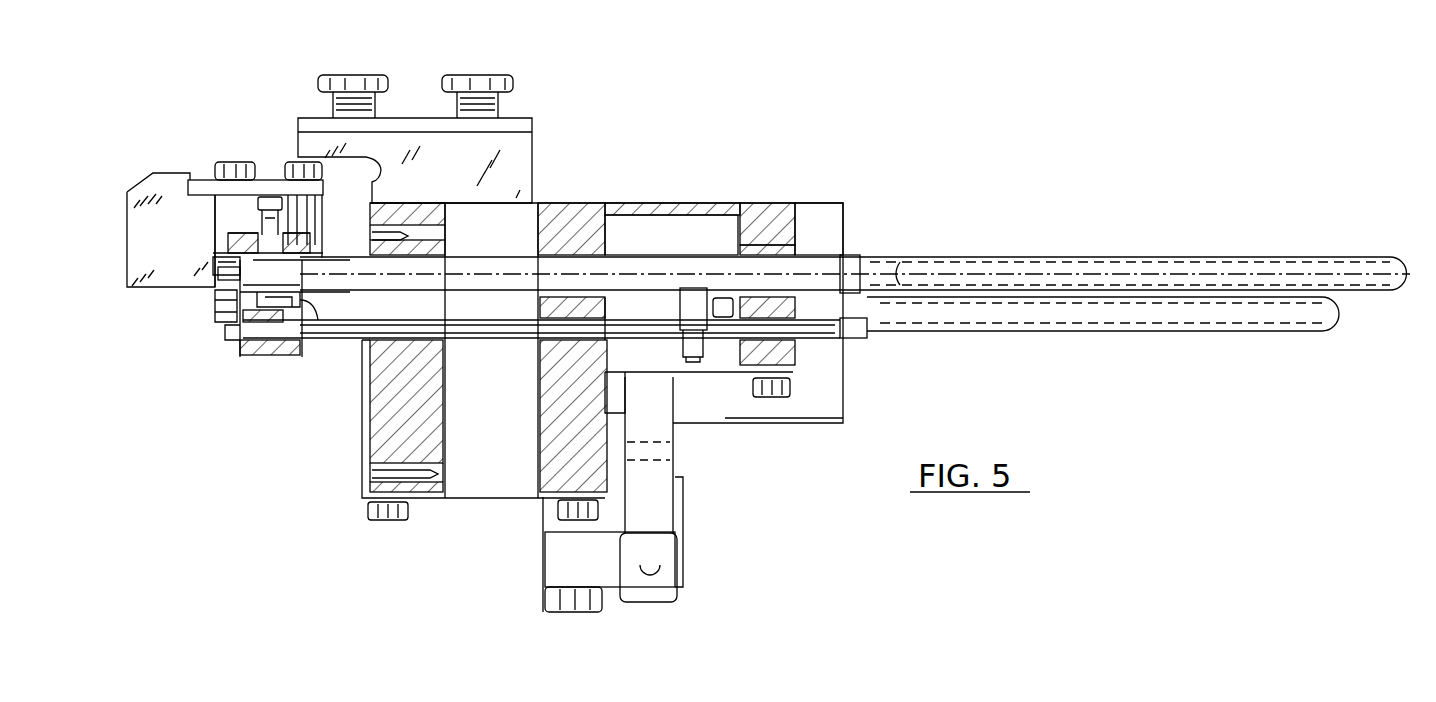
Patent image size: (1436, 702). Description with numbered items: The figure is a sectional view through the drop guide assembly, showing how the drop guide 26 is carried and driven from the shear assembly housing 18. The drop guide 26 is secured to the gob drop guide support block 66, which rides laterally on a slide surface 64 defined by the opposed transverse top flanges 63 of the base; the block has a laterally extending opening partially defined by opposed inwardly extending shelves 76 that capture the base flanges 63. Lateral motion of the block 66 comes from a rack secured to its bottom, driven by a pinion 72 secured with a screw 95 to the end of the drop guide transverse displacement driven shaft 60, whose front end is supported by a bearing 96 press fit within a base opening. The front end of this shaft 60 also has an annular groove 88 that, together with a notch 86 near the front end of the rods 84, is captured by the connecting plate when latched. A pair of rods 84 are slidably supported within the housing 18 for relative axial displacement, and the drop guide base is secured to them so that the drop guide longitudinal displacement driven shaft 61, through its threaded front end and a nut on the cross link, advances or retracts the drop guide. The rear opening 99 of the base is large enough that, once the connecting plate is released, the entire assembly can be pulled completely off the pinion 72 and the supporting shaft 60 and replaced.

The shear assembly housing 18 is at (580, 215).
The drop guide 26 is at (186, 254).
The drop guide transverse displacement driven shaft 60 is at (368, 280).
The drop guide longitudinal displacement driven shaft 61 is at (1145, 333).
The top flanges 63 is at (217, 262).
The slide surface 64 is at (237, 230).
The gob drop guide support block 66 is at (243, 203).
The pinion 72 is at (275, 348).
The shelves 76 is at (218, 307).
The rods 84 is at (492, 342).
The notch 86 is at (242, 330).
The annular groove 88 is at (223, 322).
The screw 95 is at (332, 265).
The bearing 96 is at (283, 195).
The rear opening 99 is at (297, 305).